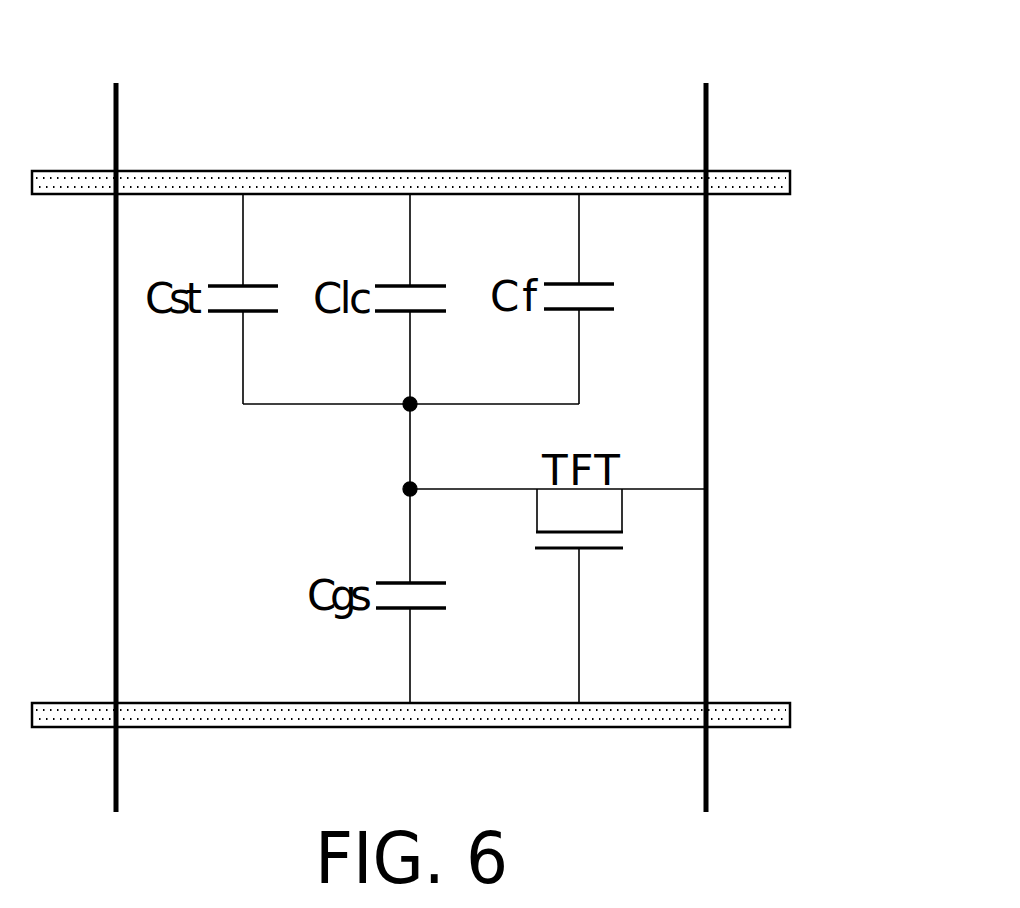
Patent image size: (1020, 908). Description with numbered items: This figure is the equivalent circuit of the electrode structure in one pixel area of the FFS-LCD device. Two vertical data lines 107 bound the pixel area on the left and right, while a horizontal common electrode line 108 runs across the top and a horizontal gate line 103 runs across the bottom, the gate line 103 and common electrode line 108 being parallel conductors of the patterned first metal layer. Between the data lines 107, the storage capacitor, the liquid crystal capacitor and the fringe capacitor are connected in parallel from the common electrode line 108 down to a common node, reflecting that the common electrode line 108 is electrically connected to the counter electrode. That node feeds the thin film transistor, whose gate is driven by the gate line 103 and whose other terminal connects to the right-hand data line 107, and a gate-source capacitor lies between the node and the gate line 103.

The data line 107 is at (113, 125).
The common electrode line 108 is at (790, 178).
The gate line 103 is at (790, 710).